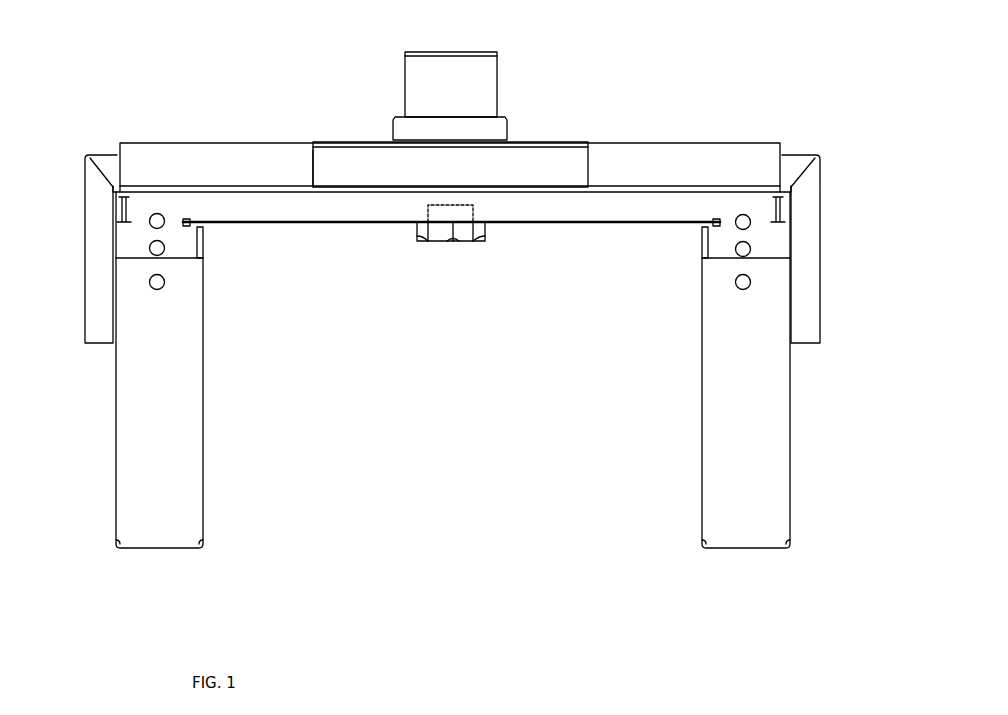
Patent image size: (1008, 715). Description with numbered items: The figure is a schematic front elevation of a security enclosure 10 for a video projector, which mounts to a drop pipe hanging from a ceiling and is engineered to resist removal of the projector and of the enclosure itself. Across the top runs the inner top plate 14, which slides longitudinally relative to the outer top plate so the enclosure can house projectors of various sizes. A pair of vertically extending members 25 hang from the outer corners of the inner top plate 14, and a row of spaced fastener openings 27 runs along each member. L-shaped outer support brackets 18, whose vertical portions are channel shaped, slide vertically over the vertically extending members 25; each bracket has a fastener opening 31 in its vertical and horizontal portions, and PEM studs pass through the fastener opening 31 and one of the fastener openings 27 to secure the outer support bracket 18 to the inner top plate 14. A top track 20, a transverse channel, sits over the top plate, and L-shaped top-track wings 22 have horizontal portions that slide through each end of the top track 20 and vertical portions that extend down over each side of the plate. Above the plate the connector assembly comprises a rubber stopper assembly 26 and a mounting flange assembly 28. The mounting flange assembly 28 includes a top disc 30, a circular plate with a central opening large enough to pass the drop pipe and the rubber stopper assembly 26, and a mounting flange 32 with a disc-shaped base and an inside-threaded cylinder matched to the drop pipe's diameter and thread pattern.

The security enclosure 10 is at (207, 73).
The inner top plate 14 is at (532, 215).
The outer support brackets 18 is at (153, 513).
The top track 20 is at (727, 155).
The top-track wings 22 is at (88, 255).
The vertically extending members 25 is at (177, 243).
The rubber stopper assembly 26 is at (467, 95).
The fastener openings 27 is at (163, 247).
The mounting flange assembly 28 is at (313, 166).
The top disc 30 is at (570, 140).
The fastener opening 31 is at (150, 289).
The mounting flange 32 is at (393, 128).